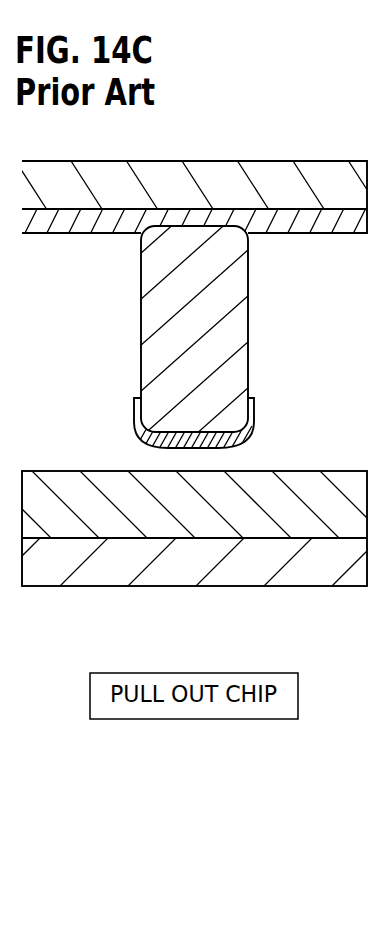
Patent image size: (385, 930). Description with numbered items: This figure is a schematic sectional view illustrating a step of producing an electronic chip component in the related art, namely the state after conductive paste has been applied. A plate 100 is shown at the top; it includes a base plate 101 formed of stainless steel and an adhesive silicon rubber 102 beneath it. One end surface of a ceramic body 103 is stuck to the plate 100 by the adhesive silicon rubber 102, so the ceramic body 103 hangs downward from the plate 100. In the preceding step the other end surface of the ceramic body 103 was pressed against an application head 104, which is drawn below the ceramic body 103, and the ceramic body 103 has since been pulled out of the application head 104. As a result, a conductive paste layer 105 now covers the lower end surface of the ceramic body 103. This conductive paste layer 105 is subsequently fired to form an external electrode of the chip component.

The plate 100 is at (287, 75).
The base plate 101 is at (172, 161).
The adhesive silicon rubber 102 is at (222, 209).
The ceramic body 103 is at (248, 307).
The application head 104 is at (257, 587).
The conductive paste layer 105 is at (255, 403).